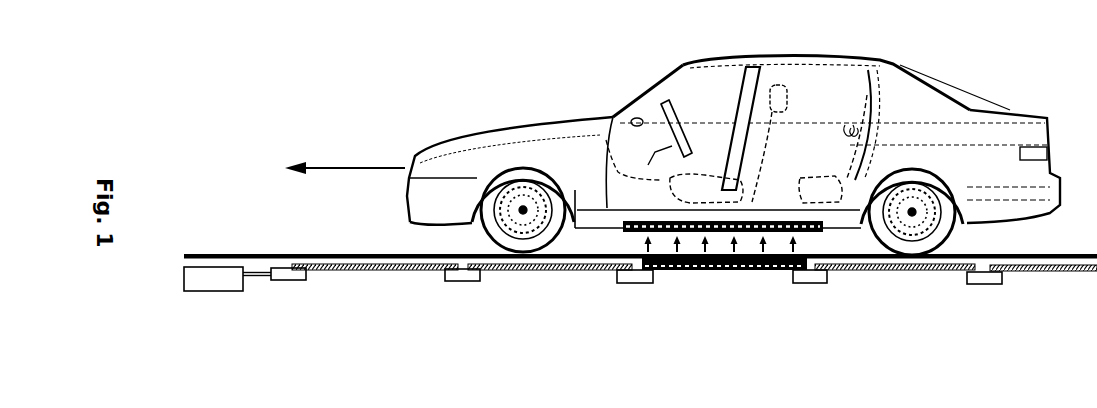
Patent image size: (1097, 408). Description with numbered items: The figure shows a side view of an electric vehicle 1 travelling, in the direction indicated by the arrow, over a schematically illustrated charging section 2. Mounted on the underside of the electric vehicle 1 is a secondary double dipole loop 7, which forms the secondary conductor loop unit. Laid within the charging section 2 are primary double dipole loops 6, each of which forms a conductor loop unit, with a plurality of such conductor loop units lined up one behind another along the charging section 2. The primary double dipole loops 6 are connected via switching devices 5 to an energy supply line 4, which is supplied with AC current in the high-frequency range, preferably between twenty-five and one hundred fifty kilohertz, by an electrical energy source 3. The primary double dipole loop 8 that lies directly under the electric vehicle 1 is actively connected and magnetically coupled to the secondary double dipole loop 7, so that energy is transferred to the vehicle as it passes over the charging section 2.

The electric vehicle 1 is at (527, 123).
The charging section 2 is at (270, 253).
The electrical energy source 3 is at (212, 280).
The energy supply line 4 is at (261, 277).
The switching devices 5 is at (455, 279).
The primary double dipole loops 6 is at (543, 270).
The secondary double dipole loop 7 is at (697, 231).
The primary double dipole loop 8 is at (757, 272).